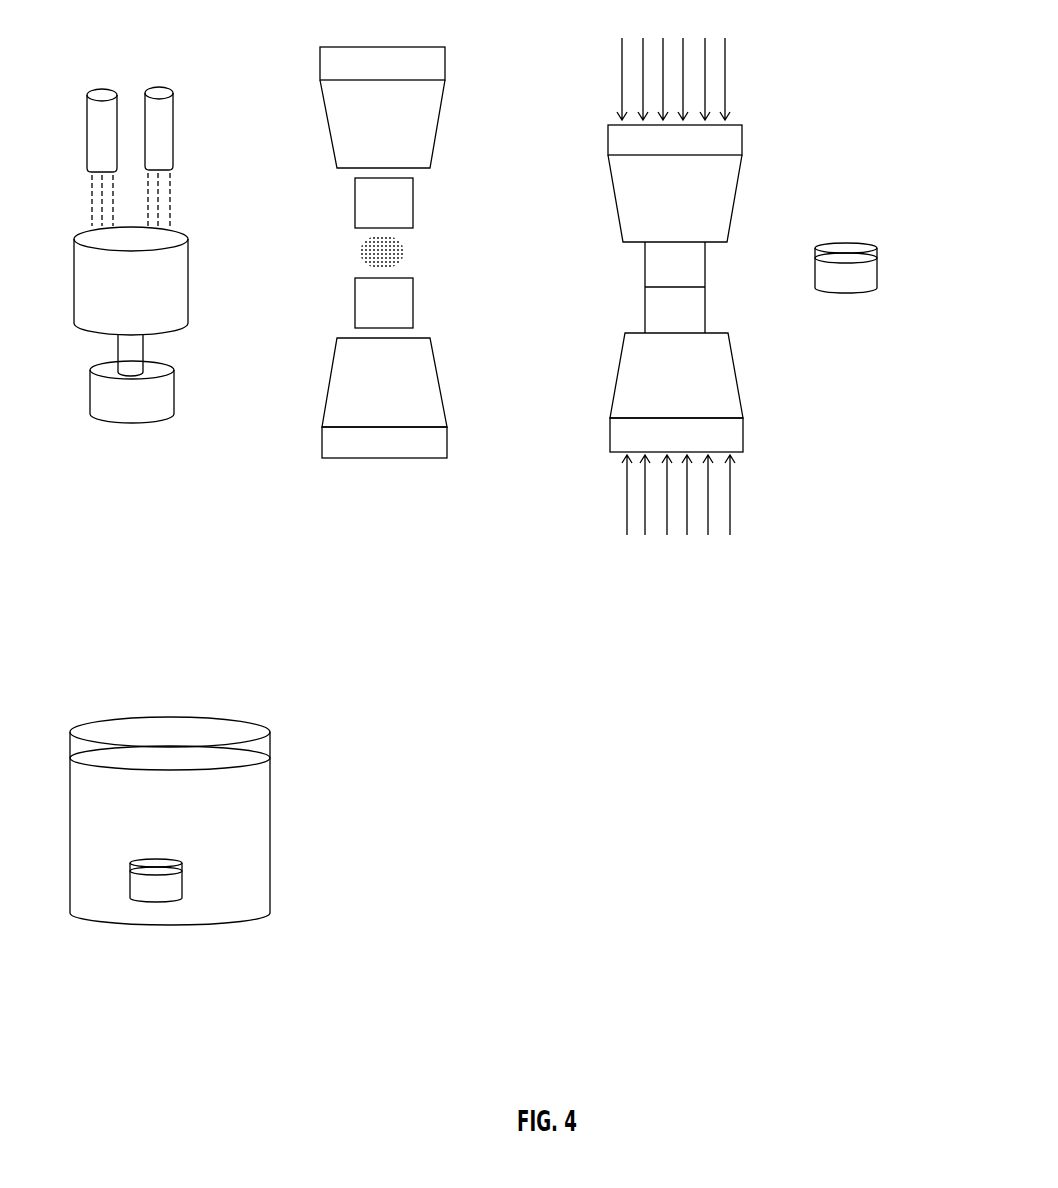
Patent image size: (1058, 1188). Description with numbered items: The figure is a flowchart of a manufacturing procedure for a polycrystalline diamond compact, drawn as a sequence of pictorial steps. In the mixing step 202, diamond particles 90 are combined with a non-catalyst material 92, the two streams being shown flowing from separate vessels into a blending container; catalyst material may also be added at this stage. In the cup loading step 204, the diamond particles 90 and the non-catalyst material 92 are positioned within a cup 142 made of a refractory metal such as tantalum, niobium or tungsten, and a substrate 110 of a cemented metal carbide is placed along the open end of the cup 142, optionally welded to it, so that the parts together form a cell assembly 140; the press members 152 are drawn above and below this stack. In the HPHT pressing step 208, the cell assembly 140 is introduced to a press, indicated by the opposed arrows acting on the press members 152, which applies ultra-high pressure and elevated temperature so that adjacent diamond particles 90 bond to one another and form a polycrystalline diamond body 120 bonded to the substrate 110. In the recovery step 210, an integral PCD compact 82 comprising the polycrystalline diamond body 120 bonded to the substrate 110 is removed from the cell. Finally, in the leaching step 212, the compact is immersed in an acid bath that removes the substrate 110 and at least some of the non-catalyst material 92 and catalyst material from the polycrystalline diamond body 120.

The integral PCD compact 82 is at (828, 242).
The diamond particles 90 is at (93, 198).
The non-catalyst material 92 is at (172, 208).
The substrate 110 is at (413, 302).
The polycrystalline diamond body 120 is at (867, 243).
The cell assembly 140 is at (467, 148).
The cup 142 is at (355, 203).
The press anvil 152 is at (328, 128).
The mixing step 202 is at (80, 442).
The cup loading step 204 is at (305, 502).
The HPHT pressing step 208 is at (597, 538).
The sealing step 210 is at (782, 335).
The leaching step 212 is at (50, 948).